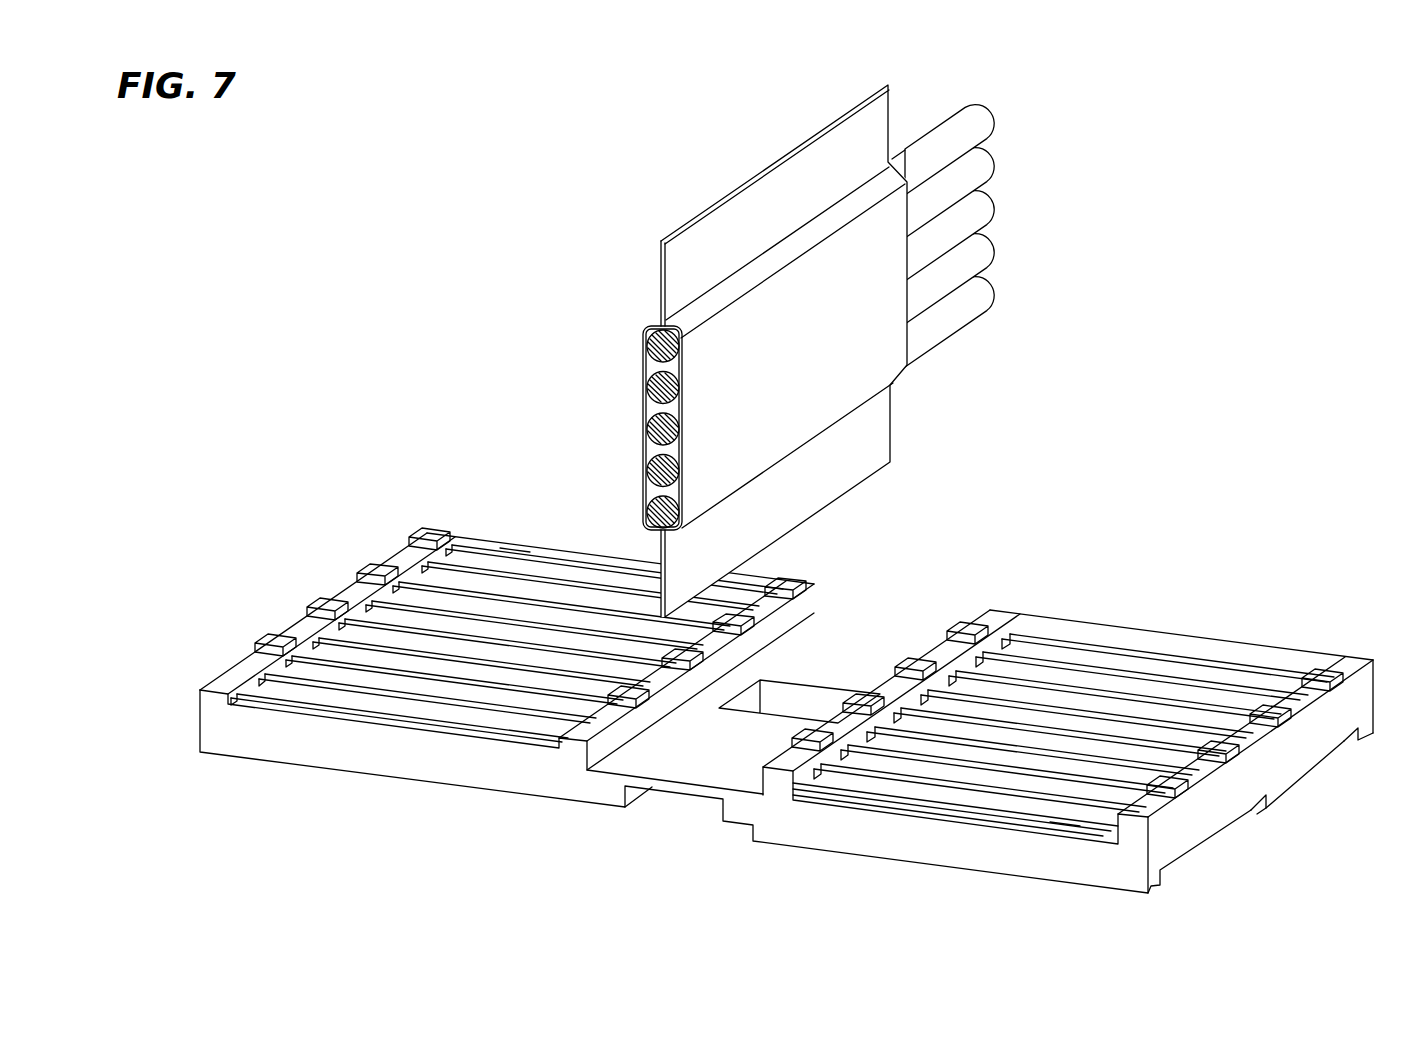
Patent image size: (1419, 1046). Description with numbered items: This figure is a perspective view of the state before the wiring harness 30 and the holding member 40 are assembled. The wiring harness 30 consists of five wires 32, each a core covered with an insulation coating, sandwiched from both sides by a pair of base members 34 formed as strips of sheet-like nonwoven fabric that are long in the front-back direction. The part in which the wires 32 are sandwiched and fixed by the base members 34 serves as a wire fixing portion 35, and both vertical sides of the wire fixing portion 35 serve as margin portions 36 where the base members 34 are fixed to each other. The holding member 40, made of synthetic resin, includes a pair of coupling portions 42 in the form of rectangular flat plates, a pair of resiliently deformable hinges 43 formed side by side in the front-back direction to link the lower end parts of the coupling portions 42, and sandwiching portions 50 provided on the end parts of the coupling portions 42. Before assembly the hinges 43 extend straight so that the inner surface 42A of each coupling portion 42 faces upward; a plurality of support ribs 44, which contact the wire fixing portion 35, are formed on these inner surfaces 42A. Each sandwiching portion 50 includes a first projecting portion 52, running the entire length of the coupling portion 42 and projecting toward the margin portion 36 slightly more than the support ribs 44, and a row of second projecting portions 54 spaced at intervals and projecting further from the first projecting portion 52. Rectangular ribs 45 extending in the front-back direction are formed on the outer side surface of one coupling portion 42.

The wiring harness 30 is at (828, 350).
The wires 32 is at (977, 213).
The base members 34 is at (640, 400).
The wire fixing portion 35 is at (810, 287).
The margin portions 36 is at (758, 517).
The holding member 40 is at (796, 677).
The coupling portions 42 is at (368, 755).
The inner surface 42A is at (516, 552).
The hinges 43 is at (868, 640).
The support ribs 44 is at (1100, 703).
The rectangular ribs 45 is at (1362, 737).
The sandwiching portions 50 is at (786, 669).
The first projecting portions 52 is at (383, 560).
The second projecting portions 54 is at (322, 603).